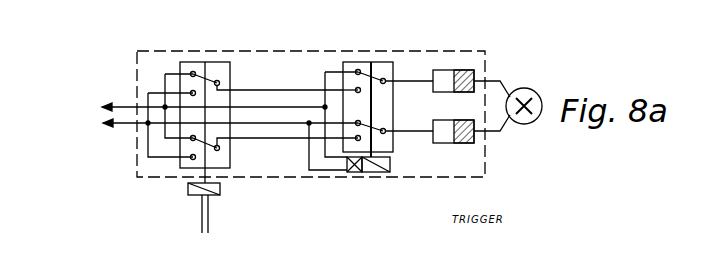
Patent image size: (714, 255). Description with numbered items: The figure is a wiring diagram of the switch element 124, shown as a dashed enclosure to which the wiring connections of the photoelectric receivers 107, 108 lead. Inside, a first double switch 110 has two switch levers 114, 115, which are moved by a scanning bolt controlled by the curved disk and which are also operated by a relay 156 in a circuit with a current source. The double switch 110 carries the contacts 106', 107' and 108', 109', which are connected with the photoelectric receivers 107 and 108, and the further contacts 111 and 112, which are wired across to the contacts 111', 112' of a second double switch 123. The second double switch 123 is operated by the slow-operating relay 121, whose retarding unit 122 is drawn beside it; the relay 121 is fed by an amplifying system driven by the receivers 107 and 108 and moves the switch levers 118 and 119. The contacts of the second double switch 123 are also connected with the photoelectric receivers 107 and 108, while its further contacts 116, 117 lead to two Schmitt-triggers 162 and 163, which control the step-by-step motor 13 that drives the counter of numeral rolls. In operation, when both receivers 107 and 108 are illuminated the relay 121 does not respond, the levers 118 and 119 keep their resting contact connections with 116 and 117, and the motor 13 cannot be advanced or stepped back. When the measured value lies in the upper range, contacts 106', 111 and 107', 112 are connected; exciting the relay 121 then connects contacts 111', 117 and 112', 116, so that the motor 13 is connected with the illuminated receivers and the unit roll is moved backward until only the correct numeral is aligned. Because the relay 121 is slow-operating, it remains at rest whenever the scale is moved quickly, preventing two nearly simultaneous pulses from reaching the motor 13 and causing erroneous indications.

The step-by-step motor 13 is at (528, 124).
The contact 106' is at (174, 80).
The photoelectric receiver 107 is at (188, 102).
The contact 107' is at (143, 149).
The photoelectric receiver 108 is at (205, 144).
The contact 108' is at (143, 112).
The contact 109' is at (143, 169).
The double switch 110 is at (215, 165).
The contact 111 is at (268, 59).
The contact 111' is at (322, 80).
The contact 112 is at (270, 173).
The contact 112' is at (334, 173).
The switch lever 114 is at (205, 62).
The switch lever 115 is at (201, 158).
The contact 116 is at (388, 70).
The contact 117 is at (386, 129).
The switch lever 118 is at (371, 62).
The switch lever 119 is at (373, 136).
The slow-operating relay 121 is at (372, 173).
The retarding unit 122 is at (353, 174).
The second double switch 123 is at (394, 61).
The switch element 124 is at (475, 163).
The relay 156 is at (190, 197).
The Schmitt-trigger 162 is at (450, 69).
The Schmitt-trigger 163 is at (447, 145).